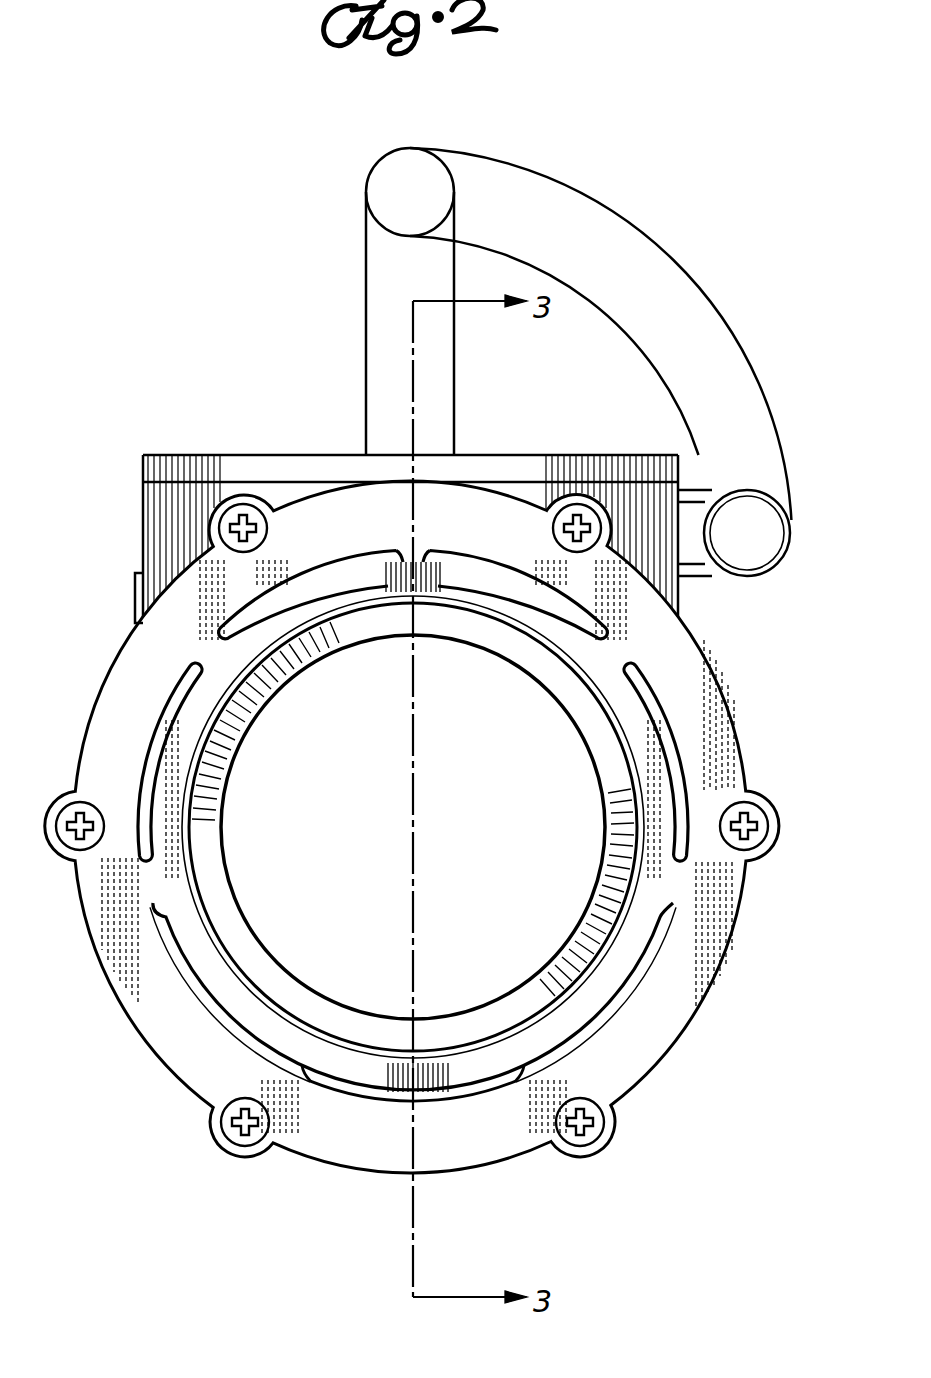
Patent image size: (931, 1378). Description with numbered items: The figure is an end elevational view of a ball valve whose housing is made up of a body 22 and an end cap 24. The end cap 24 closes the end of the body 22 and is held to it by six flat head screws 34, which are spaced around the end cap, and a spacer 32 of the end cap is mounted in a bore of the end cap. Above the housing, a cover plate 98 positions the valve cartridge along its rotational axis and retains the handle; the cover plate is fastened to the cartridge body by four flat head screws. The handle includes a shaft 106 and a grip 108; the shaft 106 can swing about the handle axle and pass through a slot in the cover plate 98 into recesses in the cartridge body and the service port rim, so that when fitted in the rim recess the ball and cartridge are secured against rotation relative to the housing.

The body 22 is at (143, 506).
The end cap 24 is at (739, 890).
The spacer 32 is at (640, 967).
The flat head screws 34 is at (250, 1145).
The cover plate 98 is at (232, 466).
The shaft 106 is at (700, 577).
The grip 108 is at (773, 577).